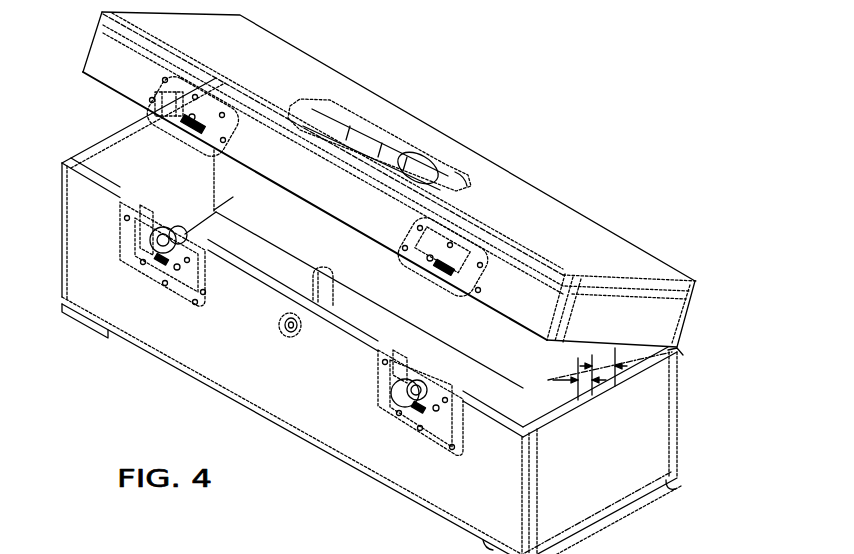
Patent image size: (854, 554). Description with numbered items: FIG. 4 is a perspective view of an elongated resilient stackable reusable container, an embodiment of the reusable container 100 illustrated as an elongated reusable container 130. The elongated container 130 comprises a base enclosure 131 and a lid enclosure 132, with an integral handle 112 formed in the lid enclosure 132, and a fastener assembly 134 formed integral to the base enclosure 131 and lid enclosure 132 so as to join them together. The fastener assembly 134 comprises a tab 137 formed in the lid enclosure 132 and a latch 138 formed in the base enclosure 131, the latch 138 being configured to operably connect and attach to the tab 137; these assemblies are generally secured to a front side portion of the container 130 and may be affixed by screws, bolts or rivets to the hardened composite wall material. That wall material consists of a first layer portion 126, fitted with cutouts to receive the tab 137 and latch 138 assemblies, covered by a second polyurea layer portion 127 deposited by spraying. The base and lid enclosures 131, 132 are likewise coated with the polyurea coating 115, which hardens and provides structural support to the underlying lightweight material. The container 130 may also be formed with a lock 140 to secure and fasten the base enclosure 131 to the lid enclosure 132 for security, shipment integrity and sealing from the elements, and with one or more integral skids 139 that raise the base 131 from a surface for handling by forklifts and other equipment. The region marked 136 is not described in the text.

The reusable container 100 is at (308, 551).
The integral handle 112 is at (448, 180).
The polyurea coating 115 is at (642, 308).
The first layer portion 126 is at (561, 377).
The second polyurea layer portion 127 is at (627, 367).
The elongated reusable container 130 is at (628, 171).
The base enclosure 131 is at (503, 513).
The lid enclosure 132 is at (577, 256).
The fastener assembly 134 is at (200, 287).
The corner 136 is at (678, 356).
The tab 137 is at (203, 127).
The latch 138 is at (135, 258).
The skids 139 is at (90, 328).
The lock 140 is at (322, 293).